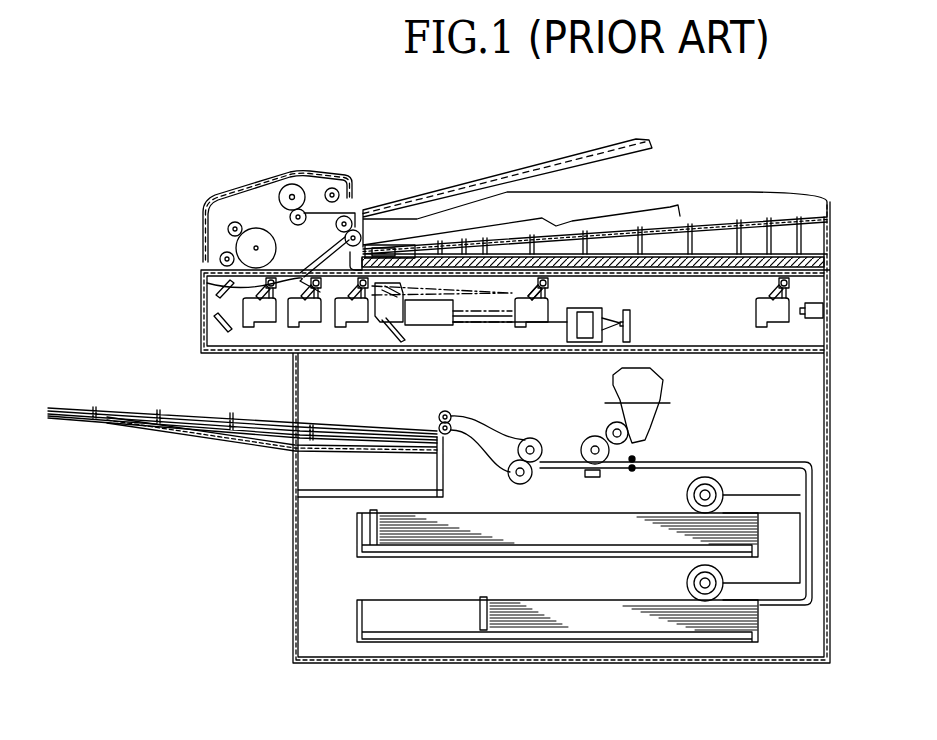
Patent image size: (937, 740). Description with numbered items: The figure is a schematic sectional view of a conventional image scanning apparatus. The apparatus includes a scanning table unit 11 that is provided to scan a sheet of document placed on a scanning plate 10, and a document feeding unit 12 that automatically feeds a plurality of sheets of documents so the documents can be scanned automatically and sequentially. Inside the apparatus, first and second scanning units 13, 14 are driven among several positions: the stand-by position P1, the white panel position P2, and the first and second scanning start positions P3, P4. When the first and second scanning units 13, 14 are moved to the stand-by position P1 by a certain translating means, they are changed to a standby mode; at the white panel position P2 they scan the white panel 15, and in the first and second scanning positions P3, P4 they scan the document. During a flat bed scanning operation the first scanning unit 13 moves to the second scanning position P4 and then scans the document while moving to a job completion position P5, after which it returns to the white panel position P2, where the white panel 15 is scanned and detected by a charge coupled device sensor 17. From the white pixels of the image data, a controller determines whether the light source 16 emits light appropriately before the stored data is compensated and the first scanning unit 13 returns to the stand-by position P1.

The scanning plate 10 is at (707, 262).
The scanning table unit 11 is at (606, 246).
The document feeding unit 12 is at (258, 191).
The first scanning unit 13 is at (513, 302).
The second scanning unit 14 is at (384, 345).
The white panel 15 is at (207, 283).
The light source 16 is at (546, 279).
The charge coupled device (CCD) sensor 17 is at (630, 322).
The stand-by position P1 is at (514, 330).
The white panel position P2 is at (288, 328).
The first scanning start position P3 is at (242, 328).
The second scanning start position P4 is at (752, 328).
The job completion position P5 is at (333, 328).